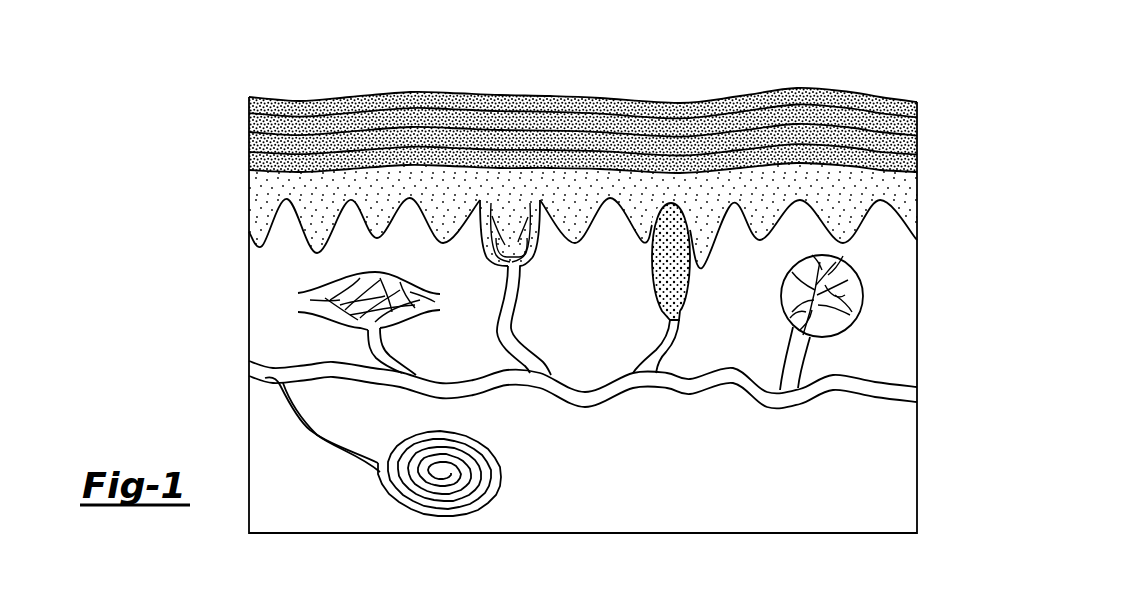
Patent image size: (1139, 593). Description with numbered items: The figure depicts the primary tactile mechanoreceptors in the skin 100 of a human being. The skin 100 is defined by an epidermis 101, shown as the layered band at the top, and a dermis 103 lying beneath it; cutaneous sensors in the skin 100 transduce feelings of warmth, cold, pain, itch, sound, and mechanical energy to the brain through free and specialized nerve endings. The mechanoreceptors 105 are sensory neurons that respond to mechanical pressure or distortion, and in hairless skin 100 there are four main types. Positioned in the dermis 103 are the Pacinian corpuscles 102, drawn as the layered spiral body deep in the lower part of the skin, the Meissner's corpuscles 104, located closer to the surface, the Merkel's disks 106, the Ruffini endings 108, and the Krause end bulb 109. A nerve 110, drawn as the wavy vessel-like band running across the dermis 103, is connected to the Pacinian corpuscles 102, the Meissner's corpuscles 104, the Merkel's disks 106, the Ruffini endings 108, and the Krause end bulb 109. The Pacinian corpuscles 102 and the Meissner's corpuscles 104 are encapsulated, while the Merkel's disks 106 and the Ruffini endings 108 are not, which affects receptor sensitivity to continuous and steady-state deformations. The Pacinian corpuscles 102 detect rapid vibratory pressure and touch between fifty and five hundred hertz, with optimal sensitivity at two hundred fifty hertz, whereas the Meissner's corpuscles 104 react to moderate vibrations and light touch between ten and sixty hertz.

The skin 100 is at (852, 63).
The epidermis 101 is at (920, 102).
The Pacinian corpuscles 102 is at (482, 441).
The dermis 103 is at (940, 332).
The Meissner's corpuscles 104 is at (660, 282).
The mechanoreceptors 105 is at (881, 268).
The Merkel's disks 106 is at (505, 268).
The Ruffini endings 108 is at (306, 293).
The Krause end bulb 109 is at (780, 300).
The nerve 110 is at (680, 401).